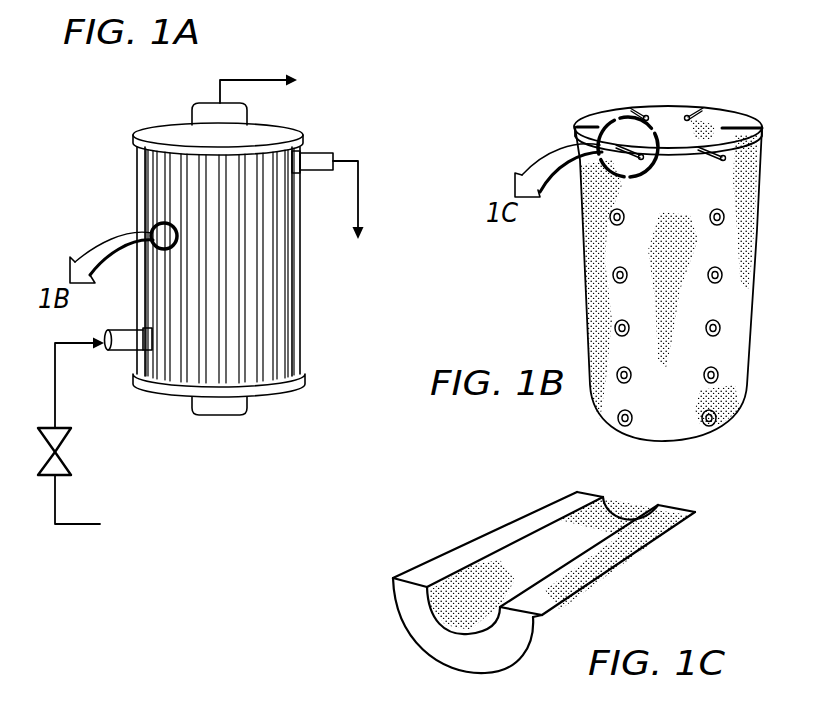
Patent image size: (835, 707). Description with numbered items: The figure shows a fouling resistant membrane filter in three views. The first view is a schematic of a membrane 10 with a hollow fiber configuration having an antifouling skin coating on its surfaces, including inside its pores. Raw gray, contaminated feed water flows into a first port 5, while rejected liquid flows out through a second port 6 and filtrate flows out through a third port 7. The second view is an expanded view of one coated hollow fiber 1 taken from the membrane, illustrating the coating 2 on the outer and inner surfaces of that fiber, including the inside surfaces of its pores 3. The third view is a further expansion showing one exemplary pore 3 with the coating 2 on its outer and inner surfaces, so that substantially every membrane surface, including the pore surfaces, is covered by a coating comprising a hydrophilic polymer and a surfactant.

In FIG. 1A, the membrane 10 is at (90, 138).
In FIG. 1A, the coated hollow fiber 1 is at (275, 335).
In FIG. 1B, the coated hollow fiber 1 is at (583, 82).
In FIG. 1A, the third port 7 is at (262, 80).
In FIG. 1A, the second port 6 is at (360, 207).
In FIG. 1A, the first port 5 is at (80, 524).
In FIG. 1B, the coating 2 is at (700, 110).
In FIG. 1C, the coating 2 is at (543, 540).
In FIG. 1B, the pore 3 is at (614, 328).
In FIG. 1C, the pore 3 is at (438, 524).